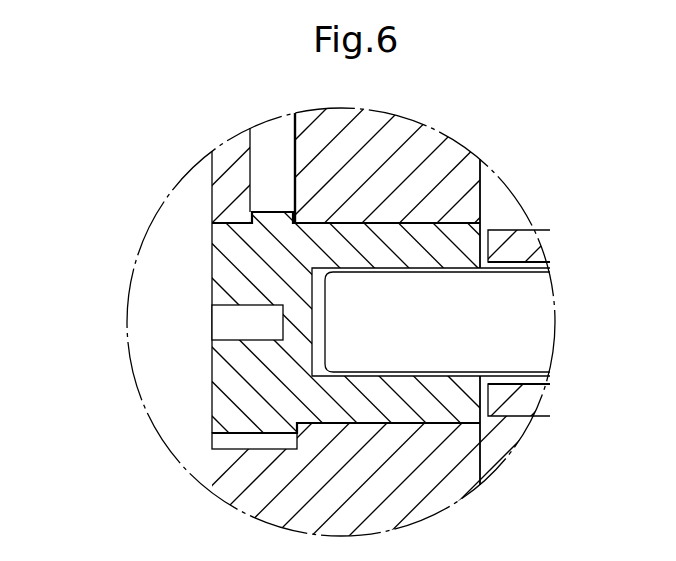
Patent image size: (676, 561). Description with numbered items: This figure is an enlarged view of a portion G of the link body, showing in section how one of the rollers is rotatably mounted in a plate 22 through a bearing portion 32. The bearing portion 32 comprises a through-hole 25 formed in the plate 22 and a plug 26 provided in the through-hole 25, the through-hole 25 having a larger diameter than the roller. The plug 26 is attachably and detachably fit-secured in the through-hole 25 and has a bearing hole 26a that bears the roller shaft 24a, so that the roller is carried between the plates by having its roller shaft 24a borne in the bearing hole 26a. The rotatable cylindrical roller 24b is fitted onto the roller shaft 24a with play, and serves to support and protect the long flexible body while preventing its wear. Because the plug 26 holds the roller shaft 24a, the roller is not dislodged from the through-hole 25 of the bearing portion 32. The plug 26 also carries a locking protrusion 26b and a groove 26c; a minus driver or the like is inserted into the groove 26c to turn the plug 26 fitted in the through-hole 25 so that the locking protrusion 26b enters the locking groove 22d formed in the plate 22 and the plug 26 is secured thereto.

The plate 22 is at (435, 140).
The locking groove 22d is at (270, 202).
The roller shaft 24a is at (543, 313).
The cylindrical roller 24b is at (528, 245).
The through-hole 25 is at (327, 421).
The plug 26 is at (338, 320).
The bearing hole 26a is at (400, 377).
The locking protrusion 26b is at (277, 215).
The groove 26c is at (222, 323).
The bearing portion 32 is at (338, 320).
The portion G is at (120, 285).